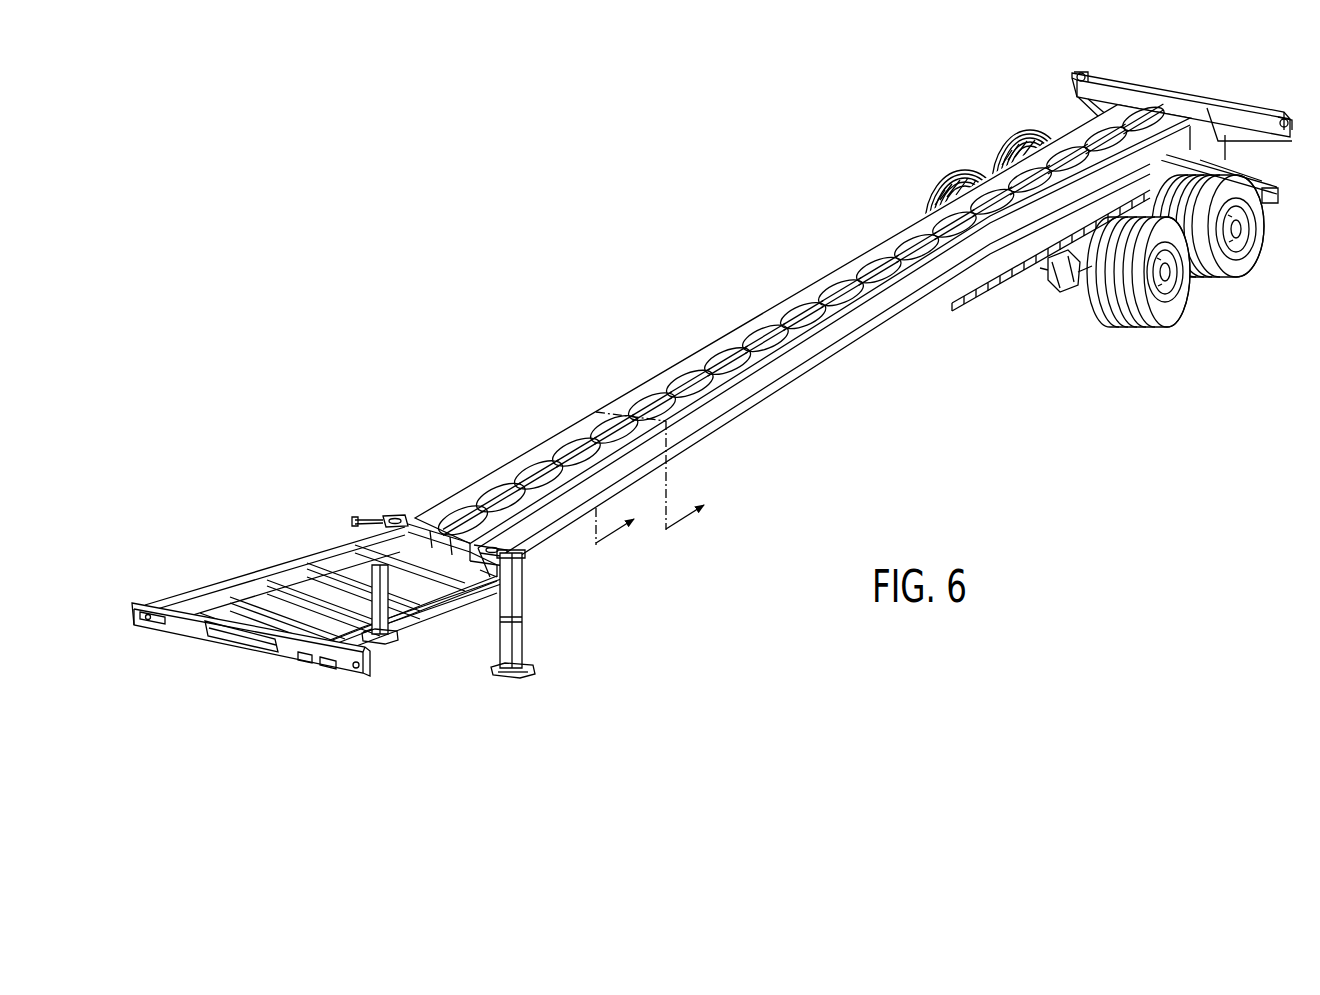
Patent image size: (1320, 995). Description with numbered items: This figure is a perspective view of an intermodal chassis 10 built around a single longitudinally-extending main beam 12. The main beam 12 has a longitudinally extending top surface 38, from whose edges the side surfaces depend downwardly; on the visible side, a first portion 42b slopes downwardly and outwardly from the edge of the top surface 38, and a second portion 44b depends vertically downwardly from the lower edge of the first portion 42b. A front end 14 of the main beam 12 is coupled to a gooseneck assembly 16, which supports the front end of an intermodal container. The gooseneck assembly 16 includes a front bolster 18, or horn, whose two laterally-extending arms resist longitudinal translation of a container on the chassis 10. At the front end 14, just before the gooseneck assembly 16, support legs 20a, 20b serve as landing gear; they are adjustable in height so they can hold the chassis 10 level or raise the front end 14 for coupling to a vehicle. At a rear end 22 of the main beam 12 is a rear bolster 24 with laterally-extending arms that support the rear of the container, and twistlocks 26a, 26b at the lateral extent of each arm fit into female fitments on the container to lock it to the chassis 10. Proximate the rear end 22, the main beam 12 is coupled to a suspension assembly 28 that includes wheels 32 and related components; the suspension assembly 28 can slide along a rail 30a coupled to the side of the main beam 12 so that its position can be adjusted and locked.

The intermodal chassis 10 is at (577, 286).
The main beam 12 is at (686, 367).
The front end 14 is at (410, 497).
The gooseneck assembly 16 is at (278, 561).
The front bolster 18 is at (244, 635).
The support leg 20a is at (535, 645).
The support leg 20b is at (387, 614).
The rear end 22 is at (1076, 117).
The rear bolster 24 is at (1150, 88).
The twistlock 26a is at (1284, 118).
The twistlock 26b is at (1083, 73).
The suspension assembly 28 is at (1073, 281).
The rail 30a is at (965, 304).
The wheels 32 is at (1010, 139).
The top surface 38 is at (781, 318).
The first portion 42b is at (835, 341).
The second portion 44b is at (795, 384).